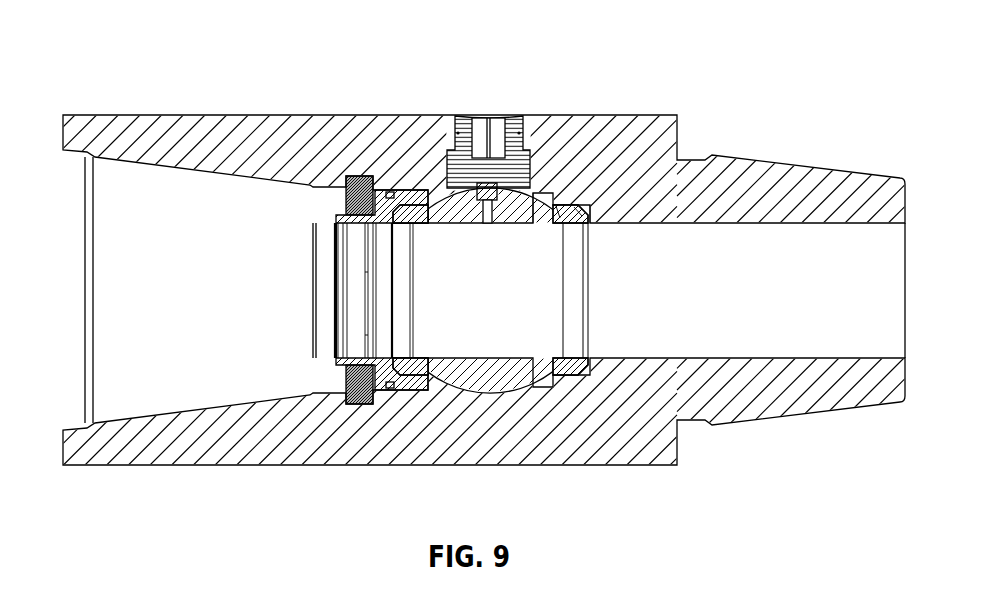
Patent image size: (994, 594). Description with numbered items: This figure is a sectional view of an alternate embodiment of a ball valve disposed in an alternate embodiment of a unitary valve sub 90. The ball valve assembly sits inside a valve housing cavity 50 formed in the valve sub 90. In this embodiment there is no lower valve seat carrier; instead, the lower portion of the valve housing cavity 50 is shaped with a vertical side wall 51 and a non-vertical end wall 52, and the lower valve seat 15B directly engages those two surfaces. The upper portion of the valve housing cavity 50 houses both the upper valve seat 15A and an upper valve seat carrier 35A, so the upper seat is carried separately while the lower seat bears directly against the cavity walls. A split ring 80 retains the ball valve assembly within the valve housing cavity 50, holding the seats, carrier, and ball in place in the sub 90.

The unitary valve sub 90 is at (592, 112).
The split ring 80 is at (371, 176).
The upper valve seat carrier 35A is at (386, 181).
The vertical side wall 51 is at (562, 208).
The non-vertical end wall 52 is at (577, 205).
The valve housing cavity 50 is at (593, 214).
The upper valve seat 15A is at (409, 374).
The lower valve seat 15B is at (565, 378).